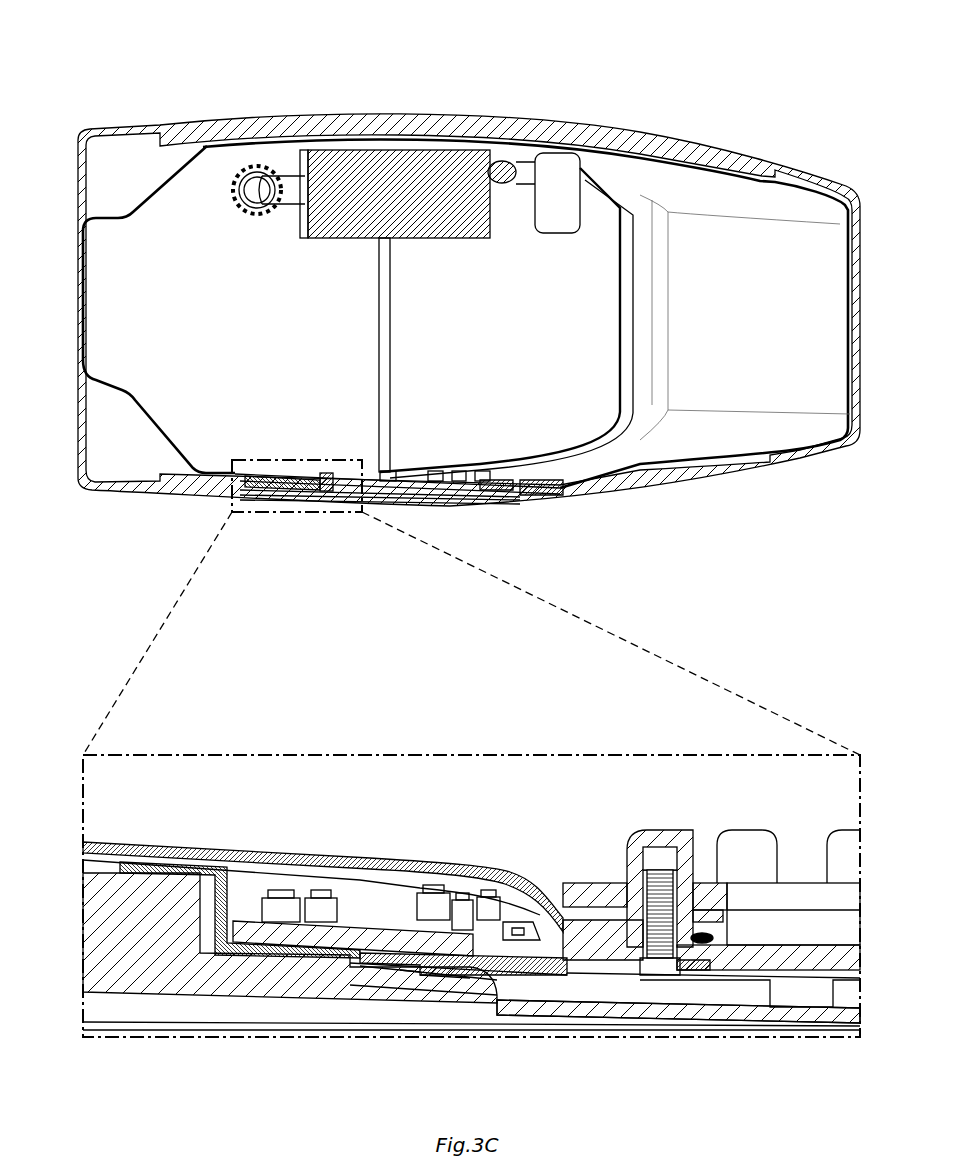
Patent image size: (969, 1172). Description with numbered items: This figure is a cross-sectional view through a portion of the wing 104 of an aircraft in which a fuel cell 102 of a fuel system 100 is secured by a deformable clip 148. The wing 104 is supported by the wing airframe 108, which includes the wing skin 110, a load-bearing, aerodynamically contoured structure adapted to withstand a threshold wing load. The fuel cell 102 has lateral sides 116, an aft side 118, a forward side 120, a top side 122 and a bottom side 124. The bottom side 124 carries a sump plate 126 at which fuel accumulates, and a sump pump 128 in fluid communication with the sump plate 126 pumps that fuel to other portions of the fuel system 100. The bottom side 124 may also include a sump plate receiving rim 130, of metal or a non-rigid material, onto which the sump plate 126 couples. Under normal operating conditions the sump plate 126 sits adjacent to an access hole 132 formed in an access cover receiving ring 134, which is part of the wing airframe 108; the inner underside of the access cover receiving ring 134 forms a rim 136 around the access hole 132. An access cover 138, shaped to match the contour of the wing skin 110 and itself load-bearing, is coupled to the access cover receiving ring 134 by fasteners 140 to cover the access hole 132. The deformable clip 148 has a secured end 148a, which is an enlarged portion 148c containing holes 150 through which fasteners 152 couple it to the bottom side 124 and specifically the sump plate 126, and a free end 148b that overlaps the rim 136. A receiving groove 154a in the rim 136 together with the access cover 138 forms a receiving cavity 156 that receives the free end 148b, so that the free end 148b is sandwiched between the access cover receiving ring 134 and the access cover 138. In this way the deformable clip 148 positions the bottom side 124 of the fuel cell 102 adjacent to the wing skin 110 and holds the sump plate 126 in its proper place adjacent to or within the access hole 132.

The fuel system 100 is at (673, 62).
The fuel cell 102 is at (812, 197).
The wing 104 is at (736, 145).
The wing airframe 108 is at (166, 124).
The wing skin 110 is at (179, 492).
The lateral sides 116 is at (212, 158).
The aft side 118 is at (88, 297).
The forward side 120 is at (810, 392).
The top side 122 is at (500, 136).
The bottom side 124 is at (548, 494).
The sump plate 126 is at (405, 478).
The sump pump 128 is at (350, 150).
The sump plate receiving rim 130 is at (590, 917).
The access hole 132 is at (510, 482).
The access cover receiving ring 134 is at (544, 490).
The rim 136 is at (385, 972).
The access cover 138 is at (505, 498).
The fasteners 140 is at (432, 893).
The deformable clip 148 is at (505, 980).
The secured end 148a is at (718, 972).
The free end 148b is at (445, 966).
The enlarged portion 148c is at (709, 913).
The holes 150 is at (662, 977).
The fasteners 152 is at (646, 977).
The receiving groove 154a is at (420, 962).
The receiving cavity 156 is at (462, 966).